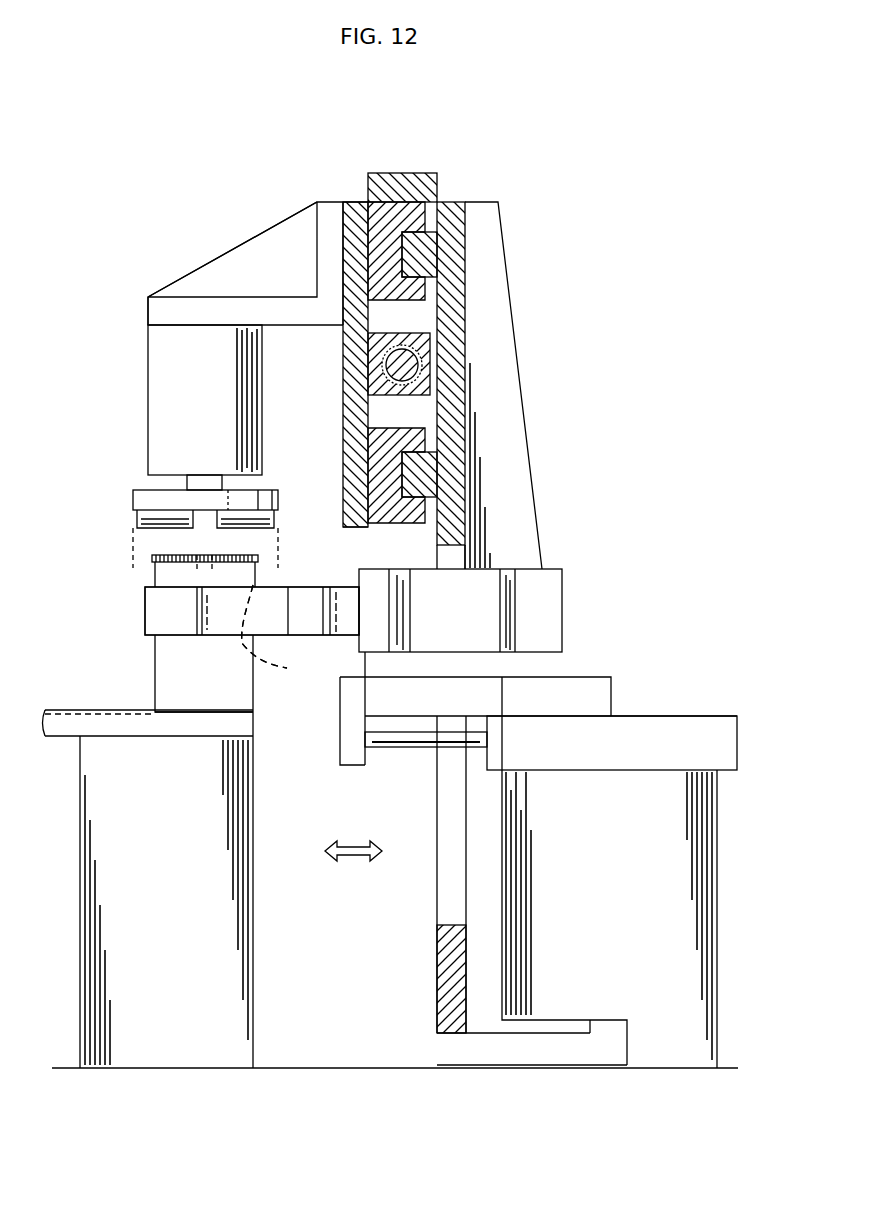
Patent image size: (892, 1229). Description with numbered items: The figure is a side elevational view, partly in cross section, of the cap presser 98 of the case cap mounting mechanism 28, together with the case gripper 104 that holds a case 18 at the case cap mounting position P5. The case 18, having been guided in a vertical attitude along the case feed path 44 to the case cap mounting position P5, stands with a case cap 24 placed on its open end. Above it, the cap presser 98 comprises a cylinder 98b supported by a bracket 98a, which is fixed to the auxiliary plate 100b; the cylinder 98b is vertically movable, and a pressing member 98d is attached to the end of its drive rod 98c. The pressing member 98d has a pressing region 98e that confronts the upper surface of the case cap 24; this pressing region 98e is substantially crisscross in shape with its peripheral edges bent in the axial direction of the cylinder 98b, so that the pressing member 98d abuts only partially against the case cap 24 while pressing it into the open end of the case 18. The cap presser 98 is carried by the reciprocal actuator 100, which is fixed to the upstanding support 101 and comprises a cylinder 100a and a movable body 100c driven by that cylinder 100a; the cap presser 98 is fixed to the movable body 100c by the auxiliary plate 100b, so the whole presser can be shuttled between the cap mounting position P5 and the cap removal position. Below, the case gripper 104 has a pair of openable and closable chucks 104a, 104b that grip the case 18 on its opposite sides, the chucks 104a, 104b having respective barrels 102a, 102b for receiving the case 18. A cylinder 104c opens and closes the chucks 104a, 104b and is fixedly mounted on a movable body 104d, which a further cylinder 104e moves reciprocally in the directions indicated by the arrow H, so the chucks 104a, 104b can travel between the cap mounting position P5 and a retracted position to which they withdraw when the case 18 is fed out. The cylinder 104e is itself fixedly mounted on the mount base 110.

The case cap mounting mechanism 28 is at (144, 294).
The cap presser 98 is at (221, 254).
The bracket 98a is at (268, 240).
The cylinder 98b is at (173, 382).
The drive rod 98c is at (203, 480).
The pressing member 98d is at (150, 497).
The pressing region 98e is at (158, 524).
The reciprocal actuator 100 is at (441, 184).
The cylinder 100a is at (401, 186).
The auxiliary plate 100b is at (355, 212).
The movable body 100c is at (360, 381).
The upstanding support 101 is at (486, 279).
The case gripper 104 is at (568, 566).
The chuck 104a is at (160, 606).
The chuck 104b is at (252, 611).
The cylinder 104c is at (548, 628).
The movable body 104d is at (595, 702).
The cylinder 104e is at (718, 738).
The case cap 24 is at (258, 578).
The case 18 is at (167, 652).
The case feed path 44 is at (55, 722).
The case cap mounting position P5 is at (194, 708).
The barrel 102a is at (288, 655).
The barrel 102b is at (264, 626).
The mount base 110 is at (684, 877).
The arrow H is at (353, 840).